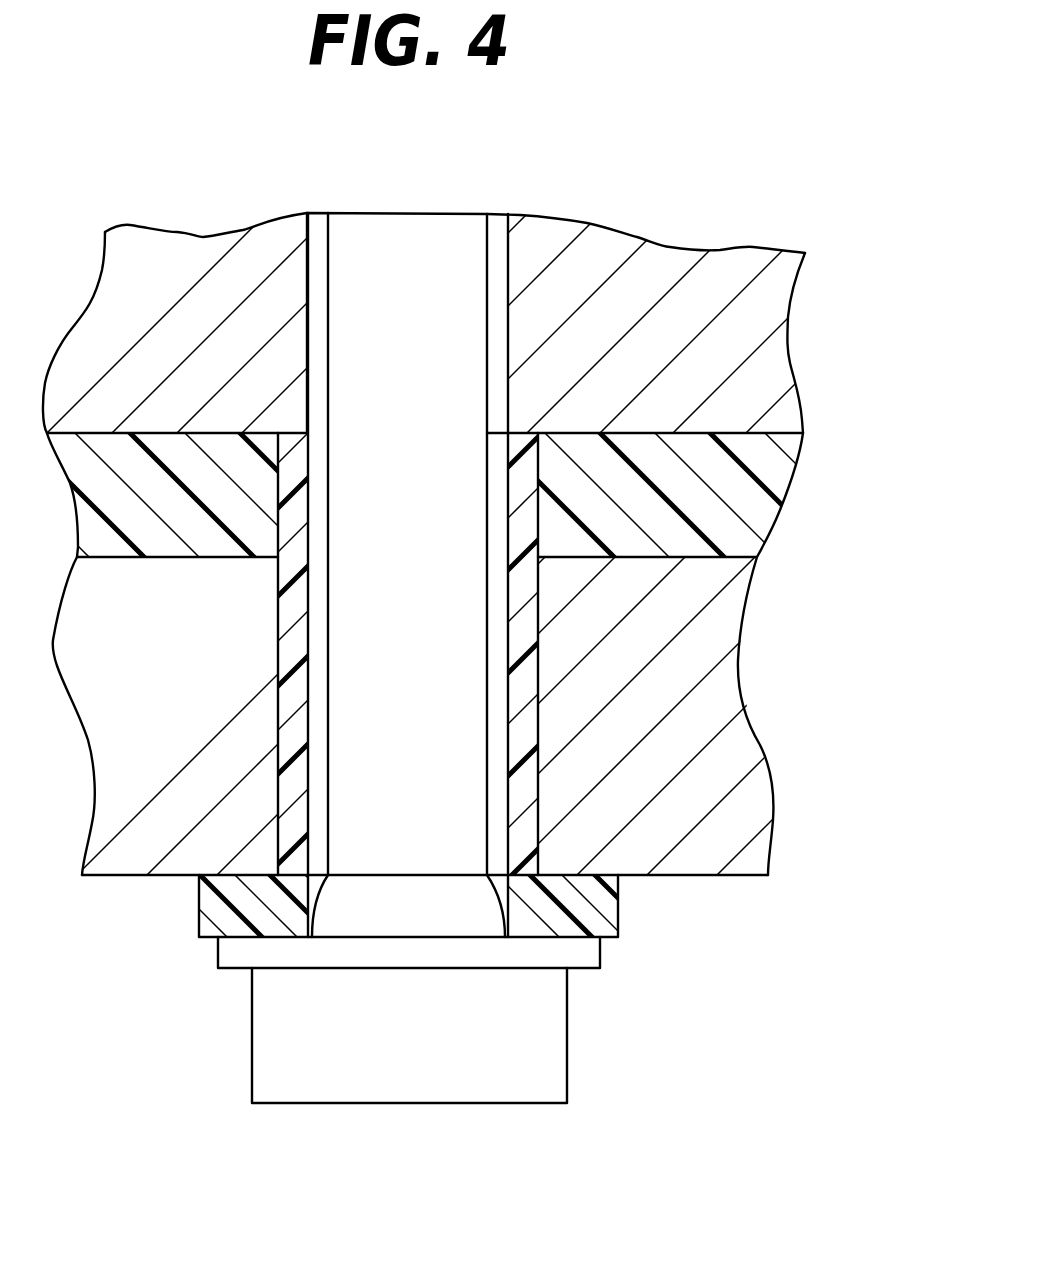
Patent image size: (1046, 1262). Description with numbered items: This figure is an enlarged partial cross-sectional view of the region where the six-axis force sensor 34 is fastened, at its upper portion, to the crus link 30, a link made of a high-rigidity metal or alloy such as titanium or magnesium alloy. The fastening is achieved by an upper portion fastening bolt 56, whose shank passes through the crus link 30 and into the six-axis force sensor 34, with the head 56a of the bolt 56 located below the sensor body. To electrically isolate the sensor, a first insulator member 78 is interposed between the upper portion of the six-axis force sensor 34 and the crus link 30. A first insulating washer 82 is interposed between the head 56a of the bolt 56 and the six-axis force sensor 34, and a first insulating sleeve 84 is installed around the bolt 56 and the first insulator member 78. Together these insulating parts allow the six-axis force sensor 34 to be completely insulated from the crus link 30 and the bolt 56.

The crus link 30 is at (722, 272).
The six-axis force sensor 34 is at (718, 637).
The upper portion fastening bolt 56 is at (435, 722).
The head of the bolt 56a is at (562, 1036).
The first insulator member 78 is at (772, 478).
The first insulating washer 82 is at (608, 917).
The first insulating sleeve 84 is at (520, 785).